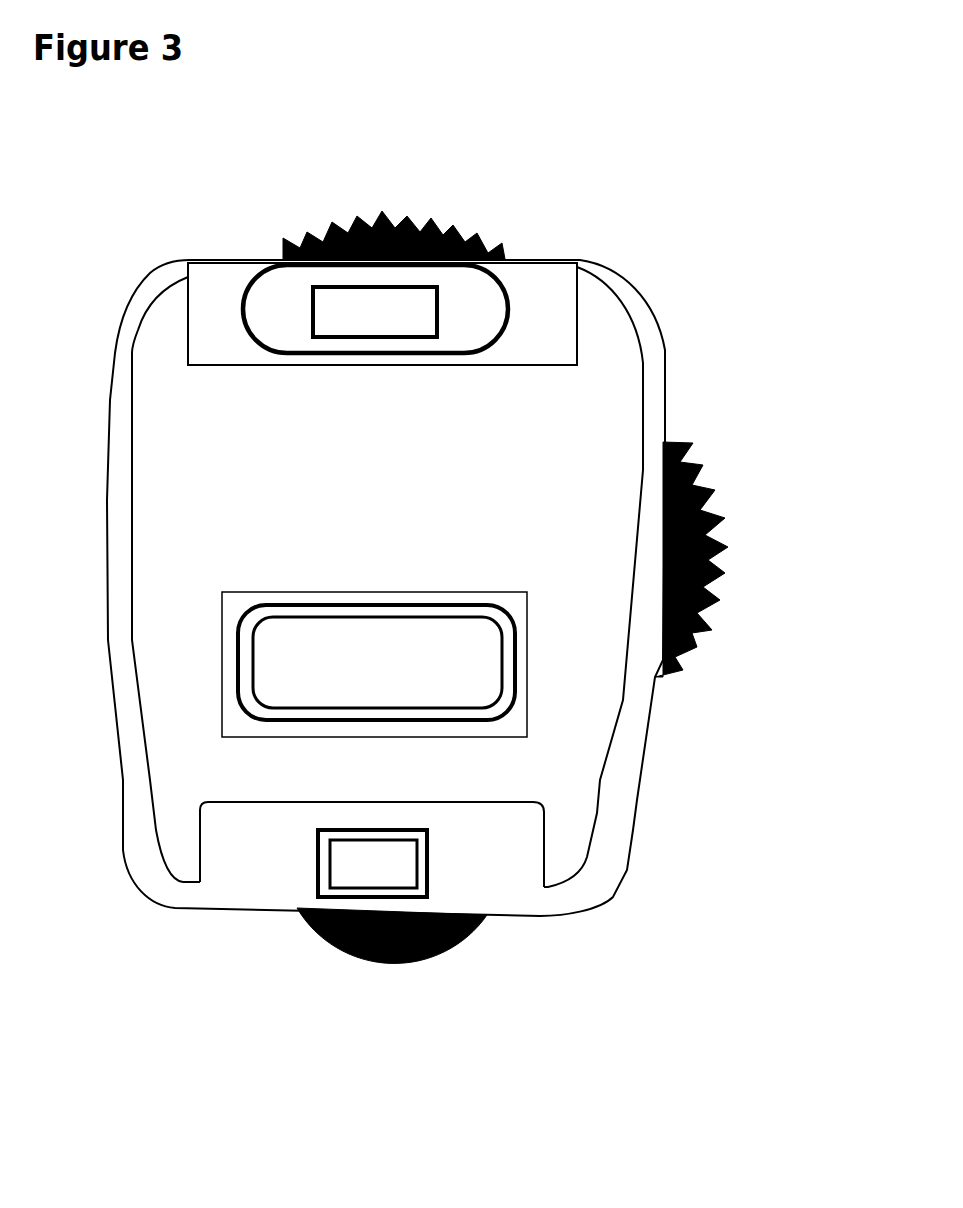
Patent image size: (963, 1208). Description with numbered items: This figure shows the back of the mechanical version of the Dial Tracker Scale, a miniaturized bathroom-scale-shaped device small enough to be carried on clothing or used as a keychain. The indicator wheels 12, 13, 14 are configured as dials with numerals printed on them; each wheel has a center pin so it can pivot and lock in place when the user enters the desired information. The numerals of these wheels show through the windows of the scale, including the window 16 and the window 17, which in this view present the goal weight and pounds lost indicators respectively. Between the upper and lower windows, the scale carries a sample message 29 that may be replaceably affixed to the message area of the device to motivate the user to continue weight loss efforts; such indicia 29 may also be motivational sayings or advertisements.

The indicator wheel 12 is at (407, 962).
The indicator wheel 13 is at (707, 625).
The indicator wheel 14 is at (460, 228).
The window 16 is at (410, 300).
The window 17 is at (393, 877).
The sample message 29 is at (477, 678).